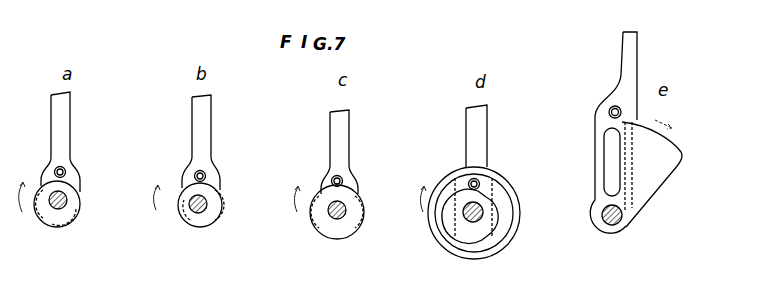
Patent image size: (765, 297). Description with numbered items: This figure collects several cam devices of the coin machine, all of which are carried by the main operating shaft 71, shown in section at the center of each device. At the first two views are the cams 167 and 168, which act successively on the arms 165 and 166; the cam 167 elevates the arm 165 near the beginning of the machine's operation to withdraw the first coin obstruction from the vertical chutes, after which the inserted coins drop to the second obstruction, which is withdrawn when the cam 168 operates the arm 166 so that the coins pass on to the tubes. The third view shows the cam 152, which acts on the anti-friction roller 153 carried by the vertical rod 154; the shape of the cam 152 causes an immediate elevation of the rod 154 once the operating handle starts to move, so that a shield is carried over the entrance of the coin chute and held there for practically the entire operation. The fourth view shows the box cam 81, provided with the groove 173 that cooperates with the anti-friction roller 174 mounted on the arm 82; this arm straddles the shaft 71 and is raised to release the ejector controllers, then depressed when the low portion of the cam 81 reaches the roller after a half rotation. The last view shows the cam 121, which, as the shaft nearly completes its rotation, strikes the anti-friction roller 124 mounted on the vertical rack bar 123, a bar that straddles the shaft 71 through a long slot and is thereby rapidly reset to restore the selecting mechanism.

The main operating shaft 71 is at (66, 208).
The cam 81 is at (452, 221).
The arm 82 is at (483, 141).
The cam 121 is at (660, 176).
The rack bar 123 is at (636, 47).
The anti-friction roller 124 is at (608, 113).
The cam 152 is at (361, 218).
The anti-friction roller 153 is at (344, 181).
The vertical rod 154 is at (345, 141).
The arm 165 is at (62, 147).
The arm 166 is at (208, 148).
The cam 167 is at (39, 216).
The cam 168 is at (221, 216).
The groove 173 is at (503, 212).
The anti-friction roller 174 is at (481, 186).